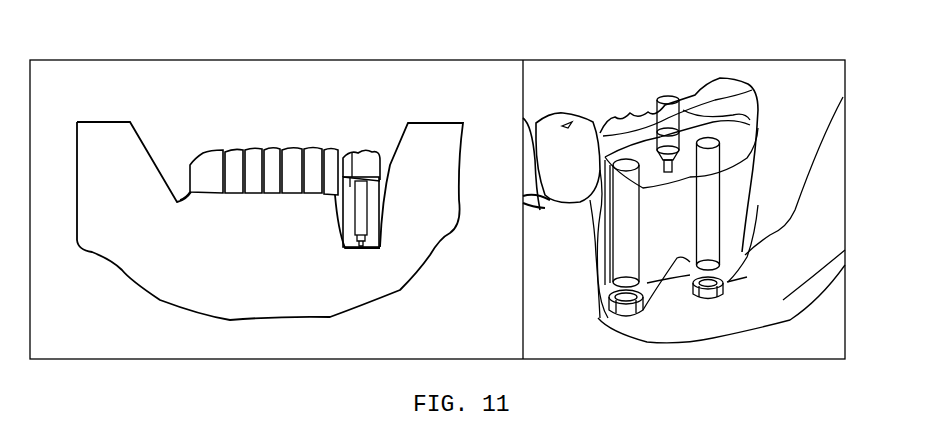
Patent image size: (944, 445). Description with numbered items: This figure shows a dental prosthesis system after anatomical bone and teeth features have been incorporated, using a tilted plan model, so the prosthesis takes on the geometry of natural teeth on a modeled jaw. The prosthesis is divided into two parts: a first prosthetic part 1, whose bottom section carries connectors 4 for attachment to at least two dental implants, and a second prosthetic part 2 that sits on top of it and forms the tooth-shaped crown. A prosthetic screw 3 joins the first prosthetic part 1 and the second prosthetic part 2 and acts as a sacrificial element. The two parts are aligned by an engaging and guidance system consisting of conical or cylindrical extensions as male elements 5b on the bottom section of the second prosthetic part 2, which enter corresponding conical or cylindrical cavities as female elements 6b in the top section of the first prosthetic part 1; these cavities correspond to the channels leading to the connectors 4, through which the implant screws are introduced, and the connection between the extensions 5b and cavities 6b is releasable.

The first prosthetic part 1 is at (735, 210).
The second prosthetic part 2 is at (735, 113).
The prosthetic screw 3 is at (671, 130).
The connector 4 is at (730, 285).
The conical or cylindrical extension as male element 5b is at (622, 160).
The conical or cylindrical cavity as female element 6b is at (612, 158).